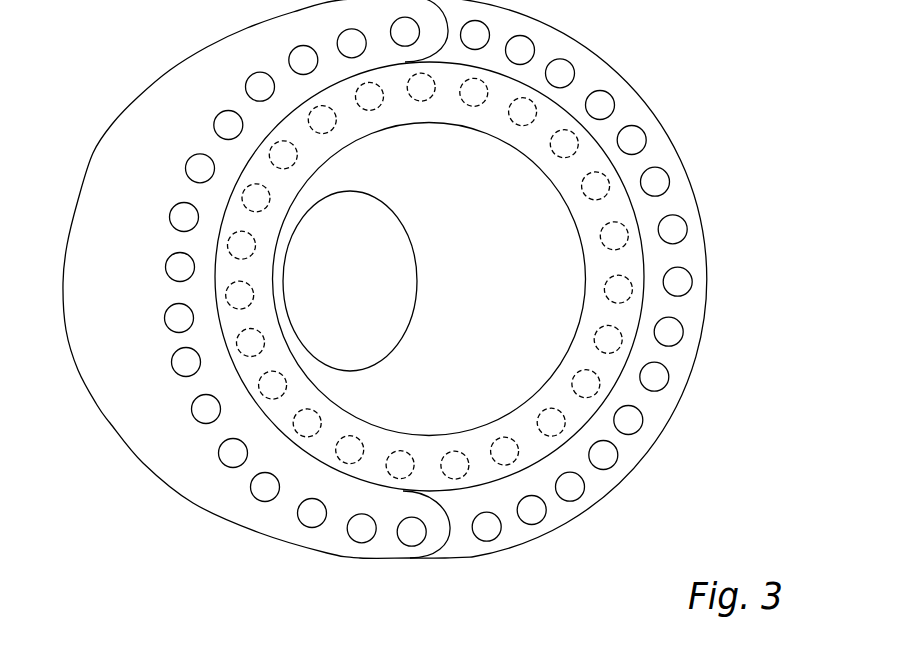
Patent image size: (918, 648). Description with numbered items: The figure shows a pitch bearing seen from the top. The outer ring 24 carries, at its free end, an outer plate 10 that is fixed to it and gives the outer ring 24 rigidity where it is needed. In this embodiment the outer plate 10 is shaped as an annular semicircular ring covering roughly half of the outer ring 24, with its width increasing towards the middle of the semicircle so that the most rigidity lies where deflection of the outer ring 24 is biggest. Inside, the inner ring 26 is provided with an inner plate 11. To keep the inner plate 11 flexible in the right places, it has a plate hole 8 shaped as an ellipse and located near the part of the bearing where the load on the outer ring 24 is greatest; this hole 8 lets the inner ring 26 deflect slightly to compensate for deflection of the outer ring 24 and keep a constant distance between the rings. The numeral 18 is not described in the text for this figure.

The outer plate 10 is at (160, 133).
The inner plate 11 is at (510, 245).
The inner ring 26 is at (615, 261).
The outer ring 24 is at (673, 352).
The hole 18 is at (573, 483).
The plate hole 8 is at (313, 290).